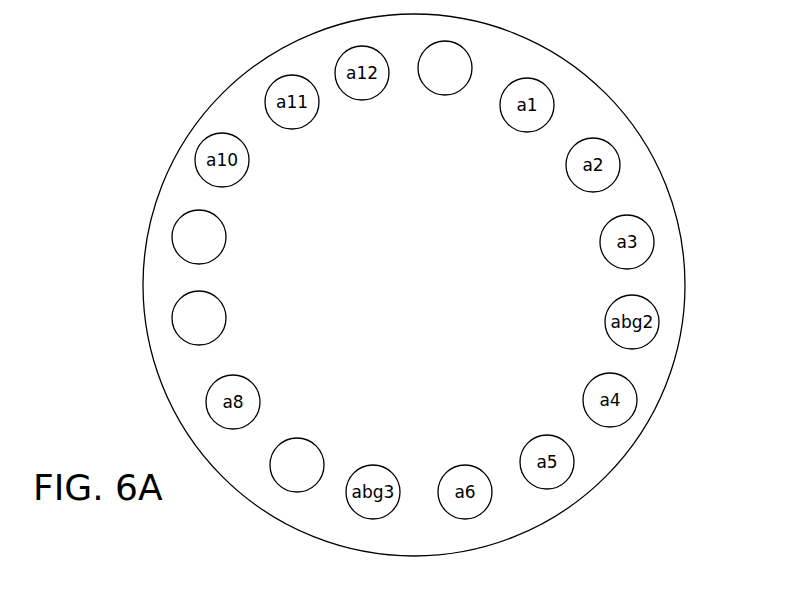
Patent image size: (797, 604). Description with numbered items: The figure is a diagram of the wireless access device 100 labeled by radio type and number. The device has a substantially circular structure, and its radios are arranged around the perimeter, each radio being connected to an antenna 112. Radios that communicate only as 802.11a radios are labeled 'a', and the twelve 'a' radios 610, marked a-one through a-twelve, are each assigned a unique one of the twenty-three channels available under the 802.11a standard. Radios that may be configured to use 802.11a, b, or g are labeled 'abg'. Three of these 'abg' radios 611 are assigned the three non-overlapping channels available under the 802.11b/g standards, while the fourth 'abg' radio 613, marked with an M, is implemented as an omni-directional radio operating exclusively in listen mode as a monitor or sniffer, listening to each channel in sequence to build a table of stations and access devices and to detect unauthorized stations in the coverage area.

The wireless access device 100 is at (384, 330).
The antenna 112 is at (271, 474).
The 'a' radios 610 is at (173, 325).
The 'abg' radios 611 is at (447, 95).
The fourth 'abg' radio 613 is at (173, 239).